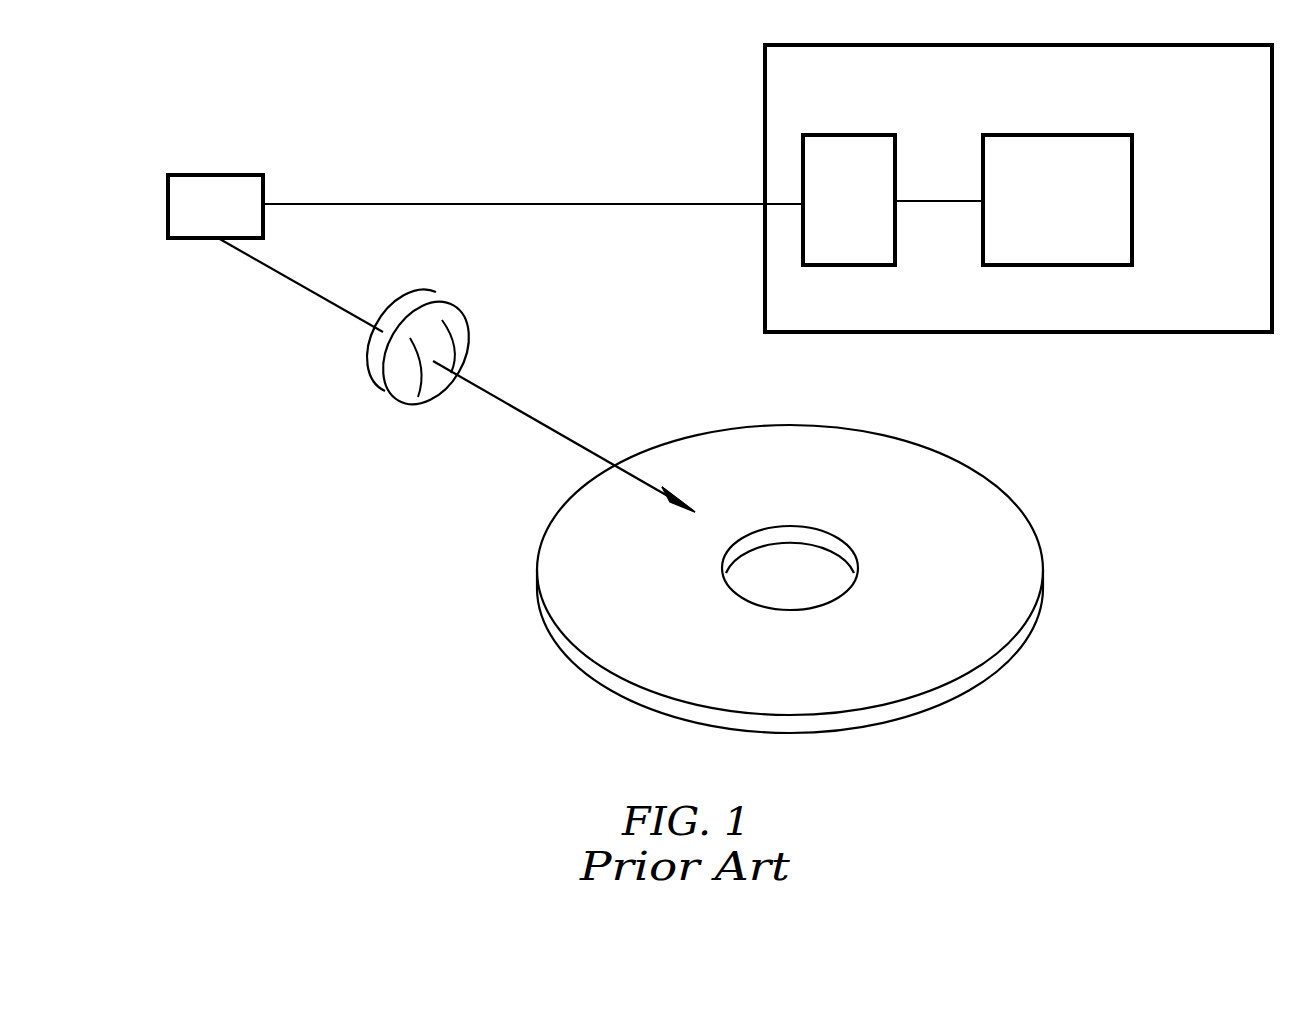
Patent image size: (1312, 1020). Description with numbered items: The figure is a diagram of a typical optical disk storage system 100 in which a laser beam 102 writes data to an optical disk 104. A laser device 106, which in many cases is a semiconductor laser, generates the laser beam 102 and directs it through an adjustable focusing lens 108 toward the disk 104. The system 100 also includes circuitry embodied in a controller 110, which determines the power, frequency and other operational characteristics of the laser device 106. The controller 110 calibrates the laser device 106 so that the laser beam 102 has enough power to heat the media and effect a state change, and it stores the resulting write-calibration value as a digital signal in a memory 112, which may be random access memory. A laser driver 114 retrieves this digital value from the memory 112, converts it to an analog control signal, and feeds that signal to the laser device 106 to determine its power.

The optical disk storage system 100 is at (313, 693).
The laser beam 102 is at (510, 412).
The optical disk 104 is at (920, 515).
The laser device 106 is at (238, 214).
The adjustable focusing lens 108 is at (455, 303).
The controller 110 is at (1138, 332).
The memory 112 is at (1075, 237).
The laser driver 114 is at (868, 210).